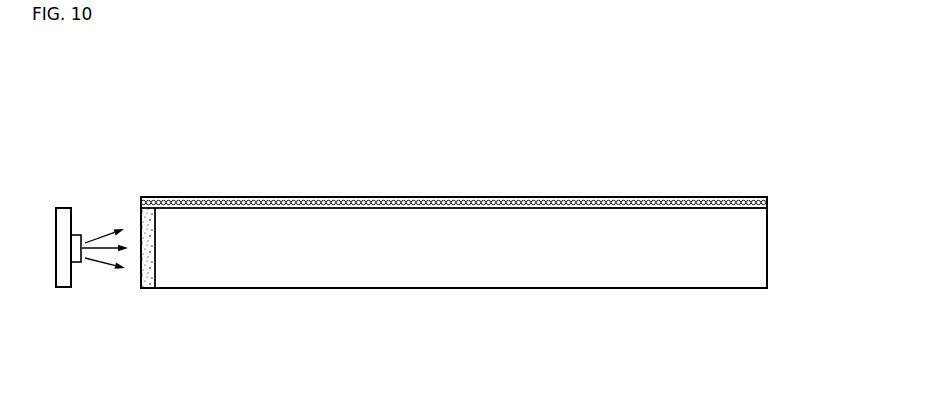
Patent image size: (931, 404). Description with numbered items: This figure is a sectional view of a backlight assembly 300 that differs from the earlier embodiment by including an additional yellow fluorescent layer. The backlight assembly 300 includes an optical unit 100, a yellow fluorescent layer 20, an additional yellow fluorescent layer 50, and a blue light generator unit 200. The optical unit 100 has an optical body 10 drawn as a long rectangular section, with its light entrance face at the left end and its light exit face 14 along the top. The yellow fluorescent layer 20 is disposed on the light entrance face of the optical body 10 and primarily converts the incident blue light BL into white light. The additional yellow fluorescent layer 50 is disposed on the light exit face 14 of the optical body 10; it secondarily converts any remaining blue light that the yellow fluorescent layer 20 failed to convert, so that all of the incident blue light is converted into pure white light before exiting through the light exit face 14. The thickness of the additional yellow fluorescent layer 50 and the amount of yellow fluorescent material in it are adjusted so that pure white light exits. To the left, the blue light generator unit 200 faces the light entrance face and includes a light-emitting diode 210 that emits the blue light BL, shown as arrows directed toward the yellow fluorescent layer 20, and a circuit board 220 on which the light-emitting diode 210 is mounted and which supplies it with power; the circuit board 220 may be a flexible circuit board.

The optical body 10 is at (382, 272).
The light exit face 14 is at (732, 208).
The yellow fluorescent layer 20 is at (147, 273).
The additional yellow fluorescent layer 50 is at (383, 197).
The optical unit 100 is at (734, 314).
The blue light generator unit 200 is at (85, 223).
The light-emitting diode 210 is at (82, 248).
The circuit board 220 is at (63, 213).
The backlight assembly 300 is at (644, 164).
The blue light BL is at (100, 262).